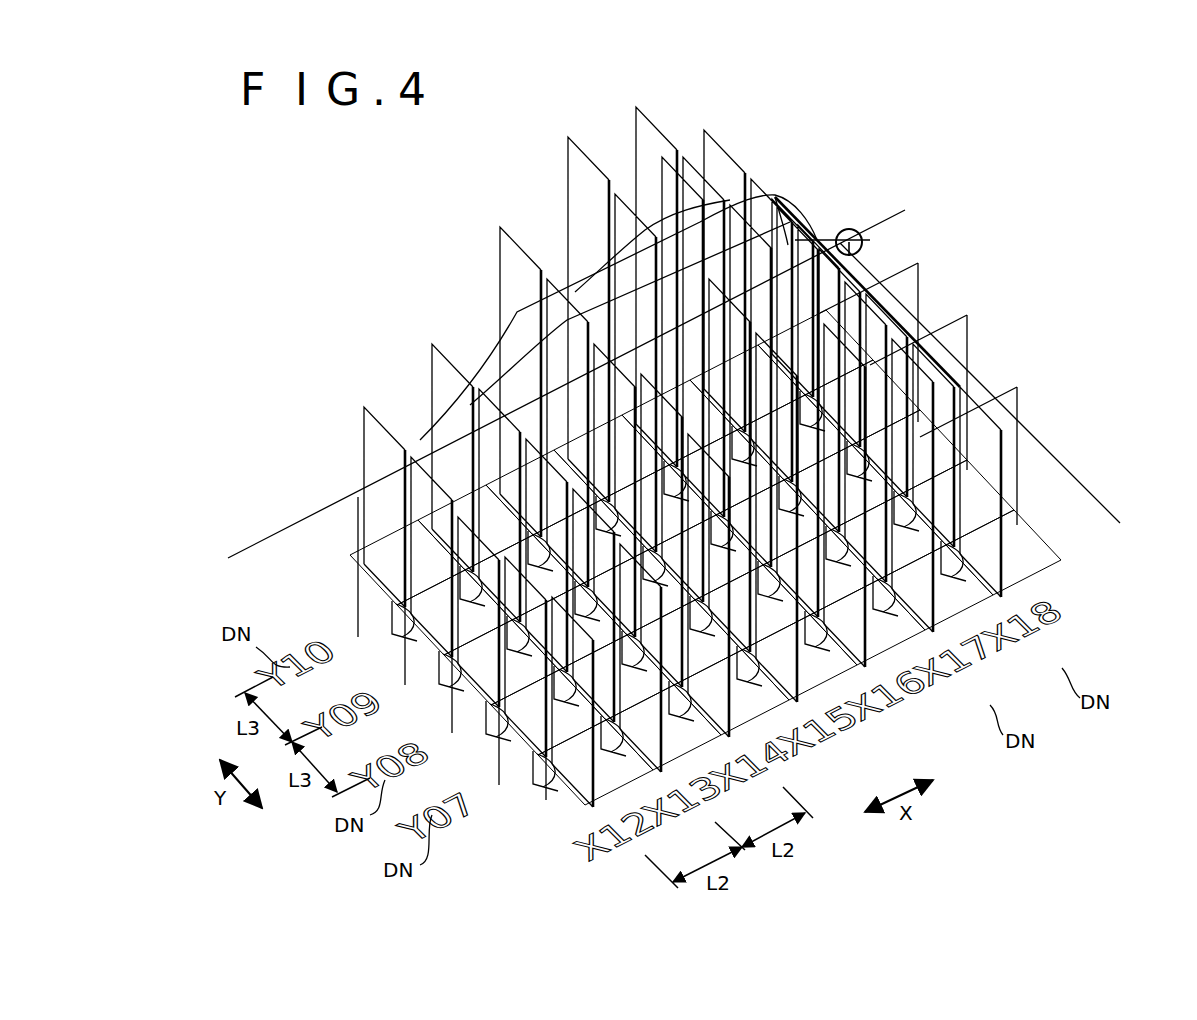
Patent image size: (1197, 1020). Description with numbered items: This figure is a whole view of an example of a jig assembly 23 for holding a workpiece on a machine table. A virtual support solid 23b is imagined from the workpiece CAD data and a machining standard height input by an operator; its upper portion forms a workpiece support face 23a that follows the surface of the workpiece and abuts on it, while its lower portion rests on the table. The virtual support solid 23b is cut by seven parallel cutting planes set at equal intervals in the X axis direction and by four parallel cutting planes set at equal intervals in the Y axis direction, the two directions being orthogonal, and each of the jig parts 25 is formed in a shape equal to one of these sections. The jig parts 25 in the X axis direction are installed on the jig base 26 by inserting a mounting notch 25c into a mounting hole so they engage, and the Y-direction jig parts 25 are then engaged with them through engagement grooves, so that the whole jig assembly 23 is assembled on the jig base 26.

The jig assembly 23 is at (736, 272).
The workpiece support face 23a is at (627, 284).
The virtual support solid 23b is at (791, 195).
The jig parts 25 is at (1013, 568).
The mounting notch 25c is at (752, 677).
The jig base 26 is at (1090, 500).